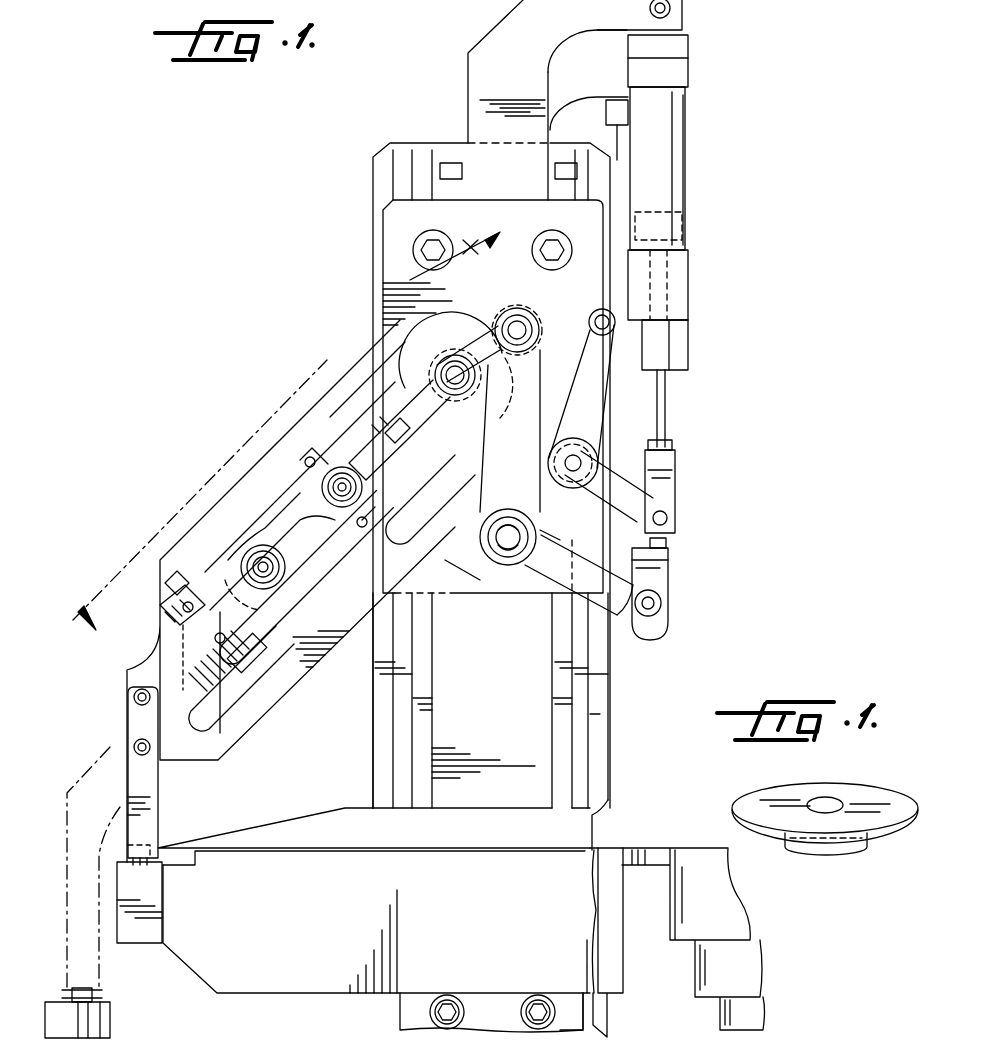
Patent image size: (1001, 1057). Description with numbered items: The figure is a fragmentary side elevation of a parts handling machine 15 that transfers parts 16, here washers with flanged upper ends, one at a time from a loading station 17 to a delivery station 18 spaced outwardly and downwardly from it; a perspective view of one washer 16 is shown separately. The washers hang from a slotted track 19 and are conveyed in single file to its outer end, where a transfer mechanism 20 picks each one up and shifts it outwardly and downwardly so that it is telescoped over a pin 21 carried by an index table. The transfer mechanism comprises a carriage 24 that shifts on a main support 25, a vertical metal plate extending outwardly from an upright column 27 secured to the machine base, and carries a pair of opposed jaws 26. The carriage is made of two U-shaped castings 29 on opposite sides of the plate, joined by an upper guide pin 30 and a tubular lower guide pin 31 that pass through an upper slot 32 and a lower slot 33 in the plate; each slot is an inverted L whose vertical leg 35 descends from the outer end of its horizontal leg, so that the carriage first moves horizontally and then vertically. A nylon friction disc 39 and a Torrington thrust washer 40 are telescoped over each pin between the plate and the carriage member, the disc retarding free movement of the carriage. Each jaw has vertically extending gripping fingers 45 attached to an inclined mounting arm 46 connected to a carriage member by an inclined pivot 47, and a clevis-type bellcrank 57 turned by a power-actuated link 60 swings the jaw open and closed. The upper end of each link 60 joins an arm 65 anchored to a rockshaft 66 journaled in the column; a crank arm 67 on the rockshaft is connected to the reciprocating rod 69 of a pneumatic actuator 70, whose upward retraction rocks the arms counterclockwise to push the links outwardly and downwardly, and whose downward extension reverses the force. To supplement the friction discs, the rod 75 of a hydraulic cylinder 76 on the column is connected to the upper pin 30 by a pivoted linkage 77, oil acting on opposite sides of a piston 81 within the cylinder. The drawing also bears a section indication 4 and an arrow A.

In FIG. 1, the parts handling machine 15 is at (415, 125).
In FIG. 1, the part 16 is at (160, 850).
In FIG. 2, the part 16 is at (865, 798).
In FIG. 1, the loading station 17 is at (168, 815).
In FIG. 1, the delivery station 18 is at (115, 1001).
In FIG. 1, the slotted track 19 is at (192, 862).
In FIG. 1, the transfer mechanism 20 is at (130, 713).
In FIG. 1, the pin 21 is at (96, 990).
In FIG. 1, the carriage 24 is at (288, 470).
In FIG. 1, the main support 25 is at (312, 672).
In FIG. 1, the jaws 26 is at (138, 657).
In FIG. 1, the upright column 27 is at (568, 735).
In FIG. 1, the U-shaped casting 29 is at (290, 492).
In FIG. 1, the upper guide pin 30 is at (455, 352).
In FIG. 1, the lower guide pin 31 is at (284, 562).
In FIG. 1, the slot 32 is at (388, 556).
In FIG. 1, the slot 33 is at (418, 508).
In FIG. 1, the vertical leg 35 is at (213, 677).
In FIG. 1, the nylon friction disc 39 is at (308, 600).
In FIG. 1, the Torrington thrust washer 40 is at (490, 326).
In FIG. 1, the gripping fingers 45 is at (148, 793).
In FIG. 1, the mounting arm 46 is at (158, 630).
In FIG. 1, the pivot 47 is at (160, 584).
In FIG. 1, the bellcrank 57 is at (345, 470).
In FIG. 1, the link 60 is at (360, 450).
In FIG. 1, the arm 65 is at (492, 463).
In FIG. 1, the rockshaft 66 is at (495, 556).
In FIG. 1, the crank arm 67 is at (530, 596).
In FIG. 1, the reciprocating rod 69 is at (670, 590).
In FIG. 1, the pneumatic actuator 70 is at (614, 147).
In FIG. 1, the rod 75 is at (668, 396).
In FIG. 1, the hydraulic cylinder 76 is at (672, 138).
In FIG. 1, the pivoted linkage 77 is at (588, 362).
In FIG. 1, the piston 81 is at (690, 214).
In FIG. 1, the section line 4 is at (191, 495).
In FIG. 1, the direction arrow A is at (455, 245).